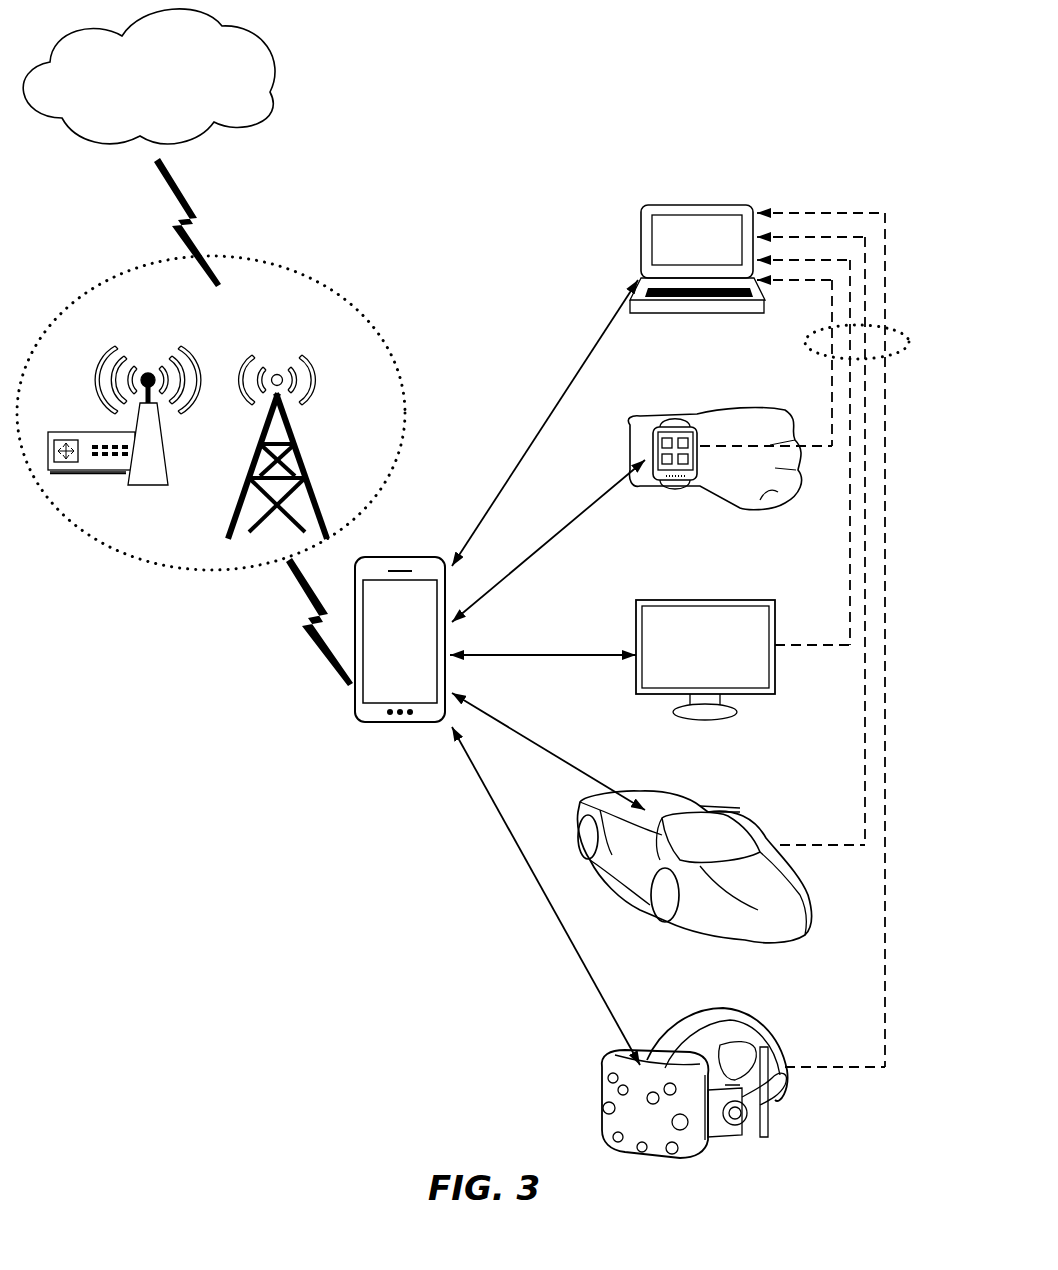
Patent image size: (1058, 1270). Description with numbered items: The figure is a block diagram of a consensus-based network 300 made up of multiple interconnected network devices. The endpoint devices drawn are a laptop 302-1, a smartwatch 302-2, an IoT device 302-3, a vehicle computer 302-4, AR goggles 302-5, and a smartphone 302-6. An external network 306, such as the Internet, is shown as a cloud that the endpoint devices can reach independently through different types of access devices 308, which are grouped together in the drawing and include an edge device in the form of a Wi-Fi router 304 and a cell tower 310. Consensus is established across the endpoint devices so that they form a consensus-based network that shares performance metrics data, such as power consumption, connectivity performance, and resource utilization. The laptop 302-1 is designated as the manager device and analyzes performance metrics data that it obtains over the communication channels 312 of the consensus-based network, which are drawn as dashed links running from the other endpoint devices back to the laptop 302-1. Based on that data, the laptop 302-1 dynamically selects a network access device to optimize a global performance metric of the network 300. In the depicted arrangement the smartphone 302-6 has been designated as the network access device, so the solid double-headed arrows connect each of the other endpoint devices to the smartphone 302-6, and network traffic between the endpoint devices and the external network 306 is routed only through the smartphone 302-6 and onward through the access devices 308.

The network 300 is at (835, 96).
The laptop 302-1 is at (690, 206).
The smartwatch 302-2 is at (679, 415).
The IoT device 302-3 is at (700, 600).
The vehicle computer 302-4 is at (697, 804).
The AR goggles 302-5 is at (749, 1013).
The smartphone 302-6 is at (402, 558).
The Wi-Fi router 304 is at (166, 450).
The external network 306 is at (167, 92).
The access devices 308 is at (344, 301).
The cell tower 310 is at (306, 472).
The communication channels 312 is at (885, 328).